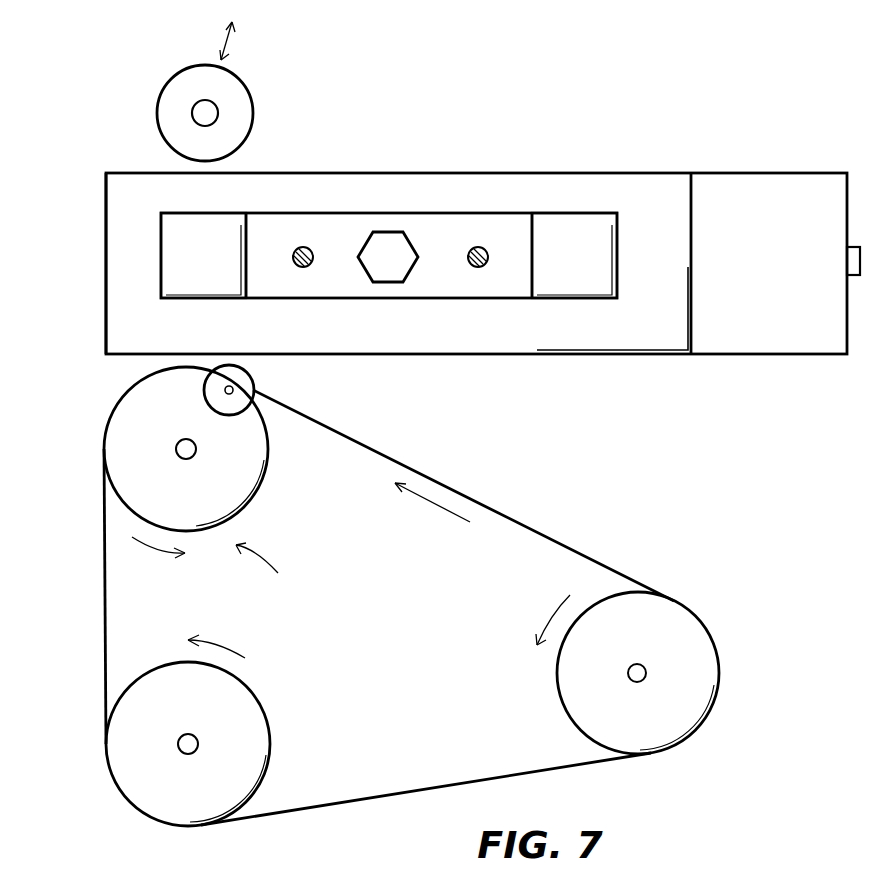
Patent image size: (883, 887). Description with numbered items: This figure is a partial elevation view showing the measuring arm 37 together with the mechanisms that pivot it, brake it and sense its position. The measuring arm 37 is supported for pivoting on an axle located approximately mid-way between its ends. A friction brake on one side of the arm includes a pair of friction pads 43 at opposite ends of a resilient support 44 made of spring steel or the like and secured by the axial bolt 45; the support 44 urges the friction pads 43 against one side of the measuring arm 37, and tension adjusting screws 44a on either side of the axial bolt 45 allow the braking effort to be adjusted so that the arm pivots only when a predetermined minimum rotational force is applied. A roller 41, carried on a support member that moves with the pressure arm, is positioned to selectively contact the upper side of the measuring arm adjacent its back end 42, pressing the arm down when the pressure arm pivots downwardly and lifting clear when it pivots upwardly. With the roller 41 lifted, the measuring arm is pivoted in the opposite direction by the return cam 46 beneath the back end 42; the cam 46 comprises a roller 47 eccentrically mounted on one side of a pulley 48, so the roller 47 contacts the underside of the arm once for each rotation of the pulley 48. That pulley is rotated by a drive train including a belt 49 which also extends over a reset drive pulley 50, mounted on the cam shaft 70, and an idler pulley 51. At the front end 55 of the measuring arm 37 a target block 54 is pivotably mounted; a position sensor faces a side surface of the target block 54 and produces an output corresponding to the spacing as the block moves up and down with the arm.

The measuring arm 37 is at (513, 173).
The roller 41 is at (250, 87).
The back end 42 is at (106, 212).
The friction pads 43 is at (210, 288).
The resilient support 44 is at (440, 280).
The tension adjusting screws 44a is at (297, 249).
The axial bolt 45 is at (386, 240).
The return cam 46 is at (220, 565).
The roller 47 is at (257, 375).
The pulley 48 is at (262, 490).
The belt 49 is at (537, 530).
The reset drive pulley 50 is at (562, 712).
The idler pulley 51 is at (258, 700).
The target block 54 is at (777, 356).
The front end 55 is at (666, 333).
The cam shaft 70 is at (637, 683).